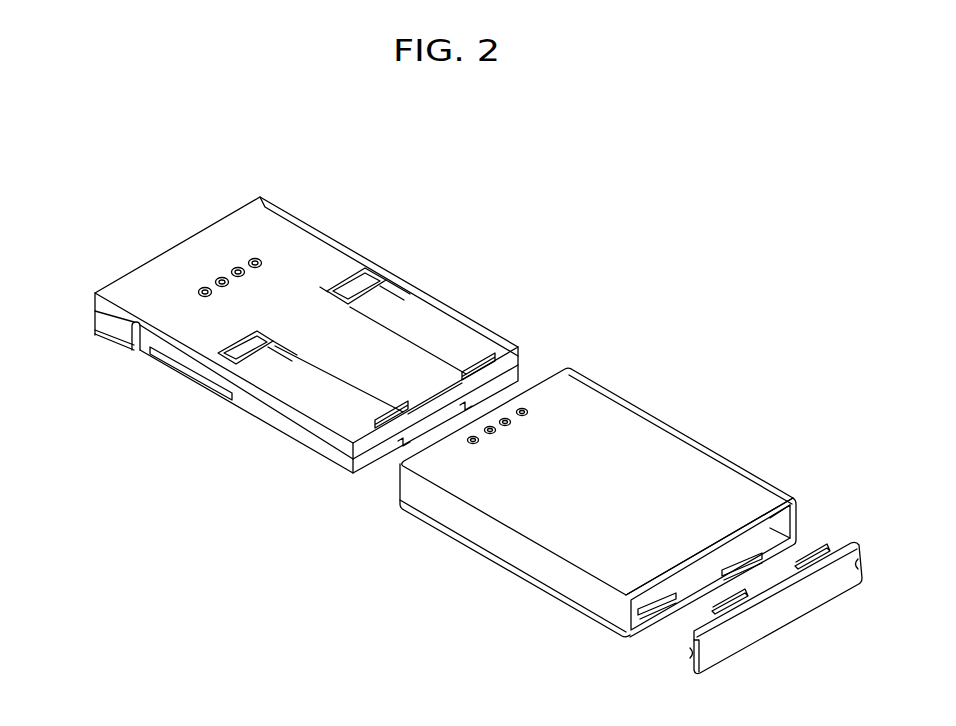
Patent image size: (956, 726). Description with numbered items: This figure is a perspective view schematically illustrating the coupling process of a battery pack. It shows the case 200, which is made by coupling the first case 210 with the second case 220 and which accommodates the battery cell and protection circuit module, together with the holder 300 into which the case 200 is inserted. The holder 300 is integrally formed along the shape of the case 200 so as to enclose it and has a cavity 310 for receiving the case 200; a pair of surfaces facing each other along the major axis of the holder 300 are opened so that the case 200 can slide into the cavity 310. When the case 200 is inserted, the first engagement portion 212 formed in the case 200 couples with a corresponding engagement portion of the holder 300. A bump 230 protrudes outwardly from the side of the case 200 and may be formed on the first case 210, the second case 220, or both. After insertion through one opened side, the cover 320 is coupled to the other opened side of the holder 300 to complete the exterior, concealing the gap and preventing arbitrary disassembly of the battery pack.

The case 200 is at (70, 252).
The first case 210 is at (175, 315).
The first engagement portion 212 is at (358, 287).
The second case 220 is at (170, 368).
The bump 230 is at (272, 233).
The holder 300 is at (667, 440).
The cavity 310 is at (650, 598).
The cover 320 is at (777, 617).